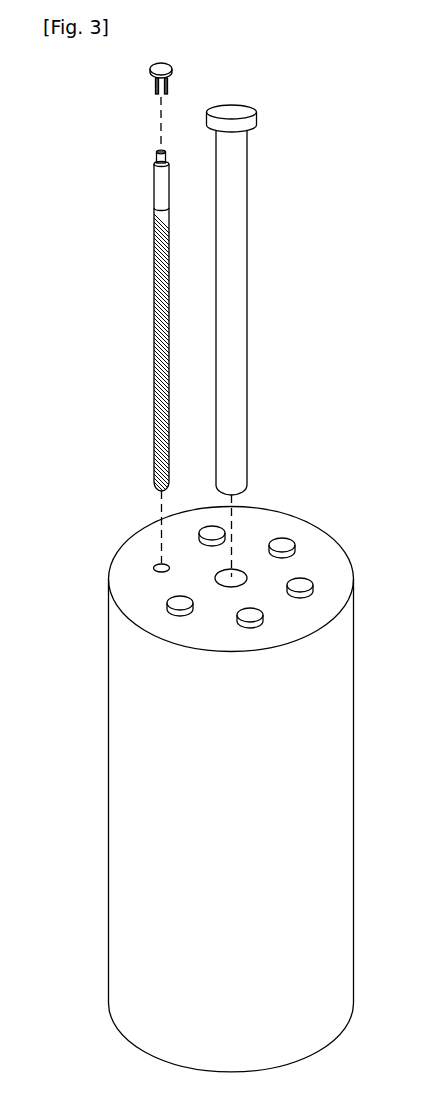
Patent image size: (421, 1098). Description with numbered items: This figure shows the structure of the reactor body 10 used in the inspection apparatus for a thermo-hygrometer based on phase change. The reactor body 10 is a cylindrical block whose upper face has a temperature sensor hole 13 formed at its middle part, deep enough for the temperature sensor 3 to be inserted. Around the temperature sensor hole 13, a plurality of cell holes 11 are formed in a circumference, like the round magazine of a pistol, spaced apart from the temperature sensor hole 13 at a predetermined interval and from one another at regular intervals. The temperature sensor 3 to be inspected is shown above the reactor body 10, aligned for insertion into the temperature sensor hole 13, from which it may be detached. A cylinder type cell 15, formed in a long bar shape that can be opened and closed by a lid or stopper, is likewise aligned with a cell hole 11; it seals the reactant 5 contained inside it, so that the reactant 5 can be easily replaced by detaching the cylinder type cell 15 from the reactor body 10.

The temperature sensor 3 is at (248, 296).
The reactant 5 is at (153, 306).
The reactor body 10 is at (113, 801).
The cell hole 11 is at (158, 565).
The temperature sensor hole 13 is at (236, 574).
The cylinder type cell 15 is at (153, 181).